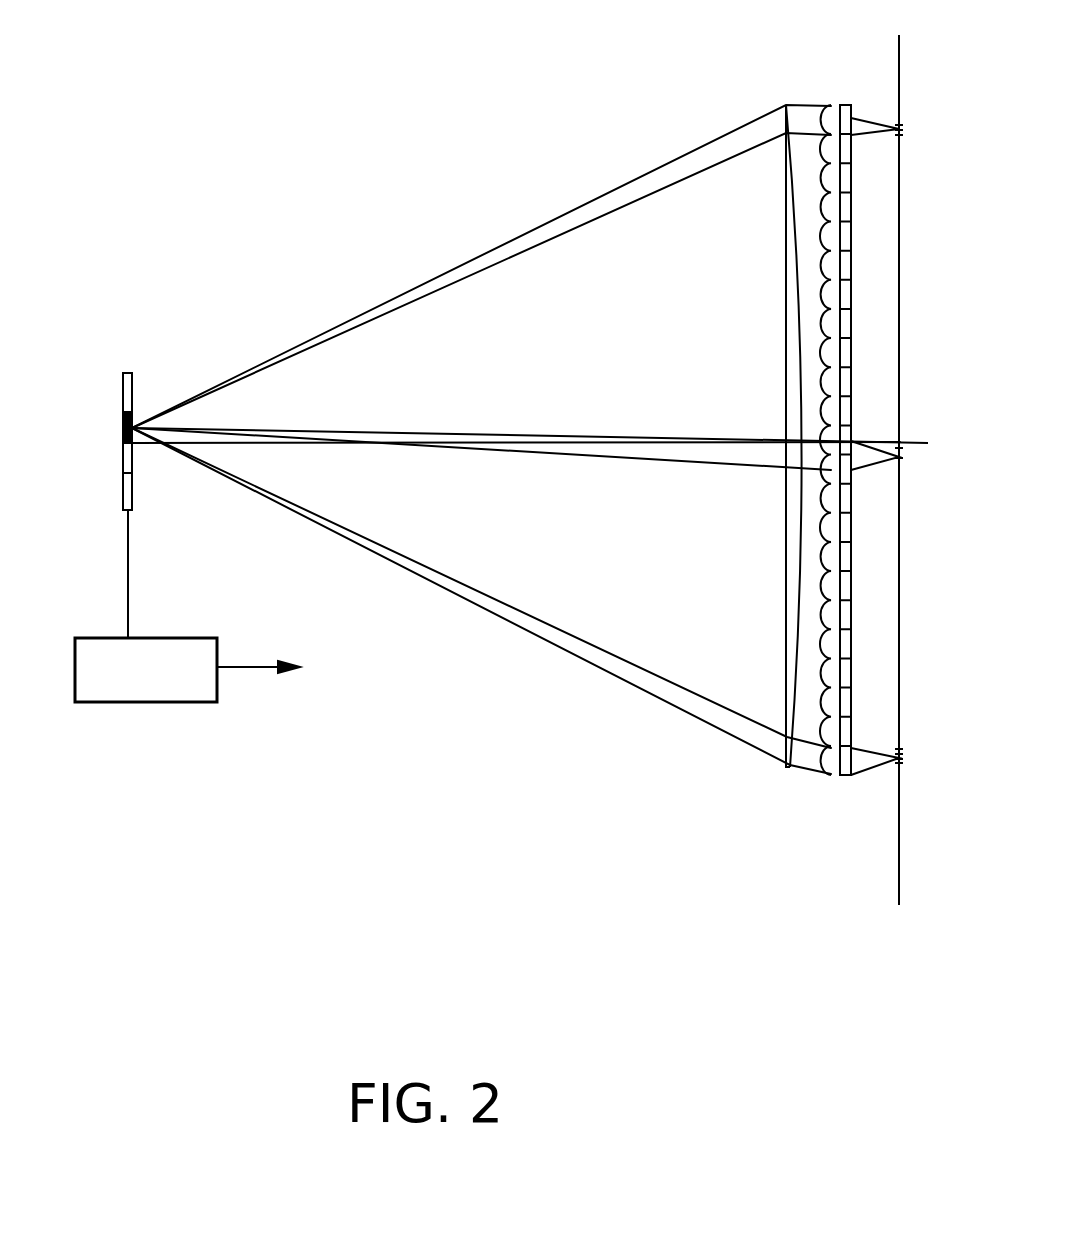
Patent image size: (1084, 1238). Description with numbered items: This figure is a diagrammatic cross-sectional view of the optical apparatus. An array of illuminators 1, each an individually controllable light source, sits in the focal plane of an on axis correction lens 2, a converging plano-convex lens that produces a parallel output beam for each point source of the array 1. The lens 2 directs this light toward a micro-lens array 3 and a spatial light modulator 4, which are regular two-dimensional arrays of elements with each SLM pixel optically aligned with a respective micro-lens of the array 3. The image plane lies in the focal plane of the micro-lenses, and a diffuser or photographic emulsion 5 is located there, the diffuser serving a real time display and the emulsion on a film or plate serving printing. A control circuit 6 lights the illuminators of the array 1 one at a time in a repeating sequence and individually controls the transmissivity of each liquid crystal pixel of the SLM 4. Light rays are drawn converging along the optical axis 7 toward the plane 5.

The array of illuminators 1 is at (118, 383).
The on axis correction lens 2 is at (786, 698).
The micro-lens array 3 is at (830, 778).
The spatial light modulator 4 is at (842, 106).
The diffuser or photographic emulsion 5 is at (900, 882).
The control circuit 6 is at (160, 703).
The optical axis 7 is at (910, 440).